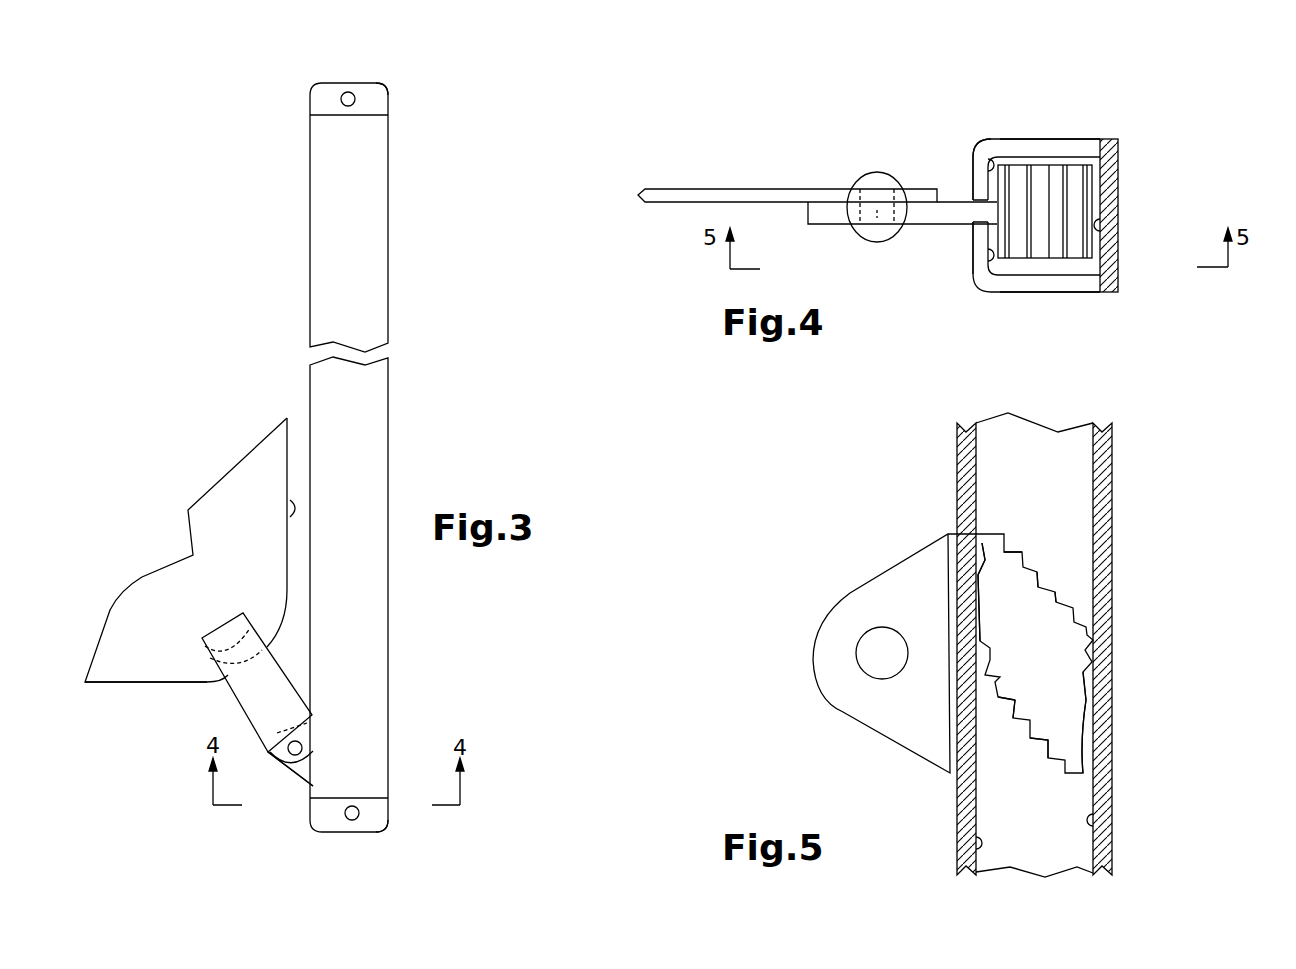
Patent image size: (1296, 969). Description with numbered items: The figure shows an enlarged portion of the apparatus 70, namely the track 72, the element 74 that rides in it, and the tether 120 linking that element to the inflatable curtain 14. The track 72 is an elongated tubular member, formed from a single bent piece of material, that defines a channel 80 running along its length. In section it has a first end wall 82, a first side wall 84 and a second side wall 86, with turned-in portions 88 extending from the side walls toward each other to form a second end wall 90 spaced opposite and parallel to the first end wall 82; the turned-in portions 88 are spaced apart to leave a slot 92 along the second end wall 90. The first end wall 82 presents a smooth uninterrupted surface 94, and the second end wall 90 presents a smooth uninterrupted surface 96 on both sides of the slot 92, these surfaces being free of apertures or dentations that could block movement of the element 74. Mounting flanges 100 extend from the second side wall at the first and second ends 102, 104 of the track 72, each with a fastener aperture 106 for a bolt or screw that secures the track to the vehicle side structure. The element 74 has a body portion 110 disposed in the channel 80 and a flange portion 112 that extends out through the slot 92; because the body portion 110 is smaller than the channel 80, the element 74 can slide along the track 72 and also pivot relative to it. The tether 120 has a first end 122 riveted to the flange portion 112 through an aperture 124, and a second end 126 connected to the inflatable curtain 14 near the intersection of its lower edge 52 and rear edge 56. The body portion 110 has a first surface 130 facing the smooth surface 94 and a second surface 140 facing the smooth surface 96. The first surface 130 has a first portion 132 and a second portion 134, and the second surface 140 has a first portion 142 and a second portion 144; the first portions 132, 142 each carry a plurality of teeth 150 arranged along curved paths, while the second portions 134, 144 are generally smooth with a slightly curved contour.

In FIG. 3, the inflatable curtain 14 is at (272, 457).
In FIG. 3, the lower edge 52 is at (103, 683).
In FIG. 3, the rear edge 56 is at (290, 504).
In FIG. 3, the apparatus 70 is at (488, 694).
In FIG. 4, the apparatus 70 is at (836, 128).
In FIG. 5, the apparatus 70 is at (1226, 541).
In FIG. 3, the track 72 is at (352, 287).
In FIG. 4, the track 72 is at (1046, 147).
In FIG. 5, the track 72 is at (1101, 504).
In FIG. 3, the element 74 is at (287, 767).
In FIG. 4, the element 74 is at (1026, 187).
In FIG. 5, the element 74 is at (865, 693).
In FIG. 4, the channel 80 is at (1058, 160).
In FIG. 5, the channel 80 is at (1030, 467).
In FIG. 4, the first end wall 82 is at (1107, 200).
In FIG. 5, the first end wall 82 is at (1105, 624).
In FIG. 4, the first side wall 84 is at (1063, 285).
In FIG. 4, the second side wall 86 is at (1080, 150).
In FIG. 4, the turned-in portions 88 is at (980, 243).
In FIG. 4, the second end wall 90 is at (972, 178).
In FIG. 5, the second end wall 90 is at (963, 490).
In FIG. 4, the slot 92 is at (988, 162).
In FIG. 4, the smooth uninterrupted surface 94 is at (1102, 225).
In FIG. 5, the smooth uninterrupted surface 94 is at (1093, 826).
In FIG. 4, the smooth uninterrupted surface 96 is at (988, 168).
In FIG. 5, the smooth uninterrupted surface 96 is at (960, 853).
In FIG. 3, the mounting flanges 100 is at (377, 100).
In FIG. 3, the first end 102 is at (373, 90).
In FIG. 3, the second end 104 is at (372, 832).
In FIG. 3, the fastener aperture 106 is at (345, 94).
In FIG. 4, the body portion 110 is at (1038, 227).
In FIG. 5, the body portion 110 is at (1050, 673).
In FIG. 3, the flange portion 112 is at (302, 778).
In FIG. 4, the flange portion 112 is at (935, 212).
In FIG. 5, the flange portion 112 is at (885, 608).
In FIG. 3, the tether 120 is at (252, 690).
In FIG. 4, the tether 120 is at (665, 195).
In FIG. 3, the first end 122 is at (303, 746).
In FIG. 4, the first end 122 is at (875, 195).
In FIG. 4, the aperture 124 is at (877, 212).
In FIG. 3, the second end 126 is at (226, 636).
In FIG. 5, the first surface 130 is at (1068, 597).
In FIG. 5, the first portion 132 is at (1038, 573).
In FIG. 5, the second portion 134 is at (1090, 748).
In FIG. 5, the second surface 140 is at (1015, 700).
In FIG. 5, the first portion 142 is at (988, 708).
In FIG. 5, the second portion 144 is at (982, 555).
In FIG. 4, the teeth 150 is at (1055, 237).
In FIG. 5, the teeth 150 is at (1020, 560).